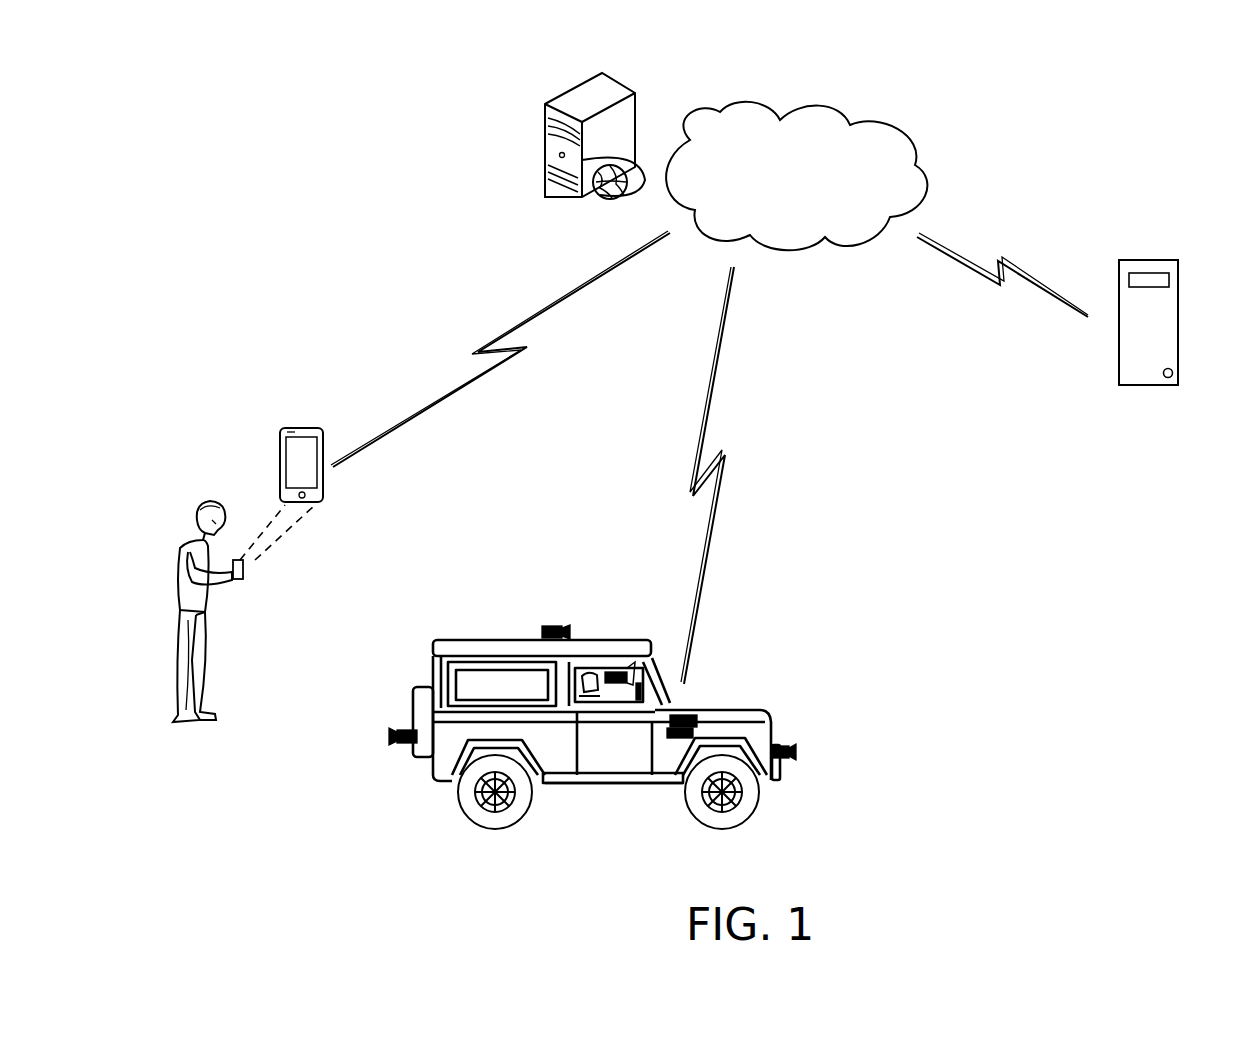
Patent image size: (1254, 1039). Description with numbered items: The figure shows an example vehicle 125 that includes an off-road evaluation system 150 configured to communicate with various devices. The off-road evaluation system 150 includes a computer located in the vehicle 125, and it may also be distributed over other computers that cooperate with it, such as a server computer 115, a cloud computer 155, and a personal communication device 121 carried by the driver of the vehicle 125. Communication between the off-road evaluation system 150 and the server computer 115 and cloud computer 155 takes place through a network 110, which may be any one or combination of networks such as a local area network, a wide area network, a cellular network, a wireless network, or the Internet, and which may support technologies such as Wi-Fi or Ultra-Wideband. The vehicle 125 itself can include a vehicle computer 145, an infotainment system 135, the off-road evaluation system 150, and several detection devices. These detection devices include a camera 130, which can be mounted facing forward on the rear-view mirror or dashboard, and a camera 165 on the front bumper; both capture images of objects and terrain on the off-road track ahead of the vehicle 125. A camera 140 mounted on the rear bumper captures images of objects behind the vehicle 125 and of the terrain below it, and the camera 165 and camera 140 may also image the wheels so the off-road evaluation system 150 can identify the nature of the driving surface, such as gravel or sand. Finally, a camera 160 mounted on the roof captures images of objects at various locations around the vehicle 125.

The network 110 is at (862, 153).
The server computer 115 is at (1178, 325).
The personal communication device 121 is at (280, 470).
The vehicle 125 is at (790, 600).
The camera 130 is at (622, 665).
The infotainment system 135 is at (642, 683).
The camera 140 is at (388, 740).
The vehicle computer 145 is at (664, 722).
The off-road evaluation system 150 is at (676, 742).
The cloud computer 155 is at (548, 76).
The camera 160 is at (544, 626).
The camera 165 is at (785, 742).